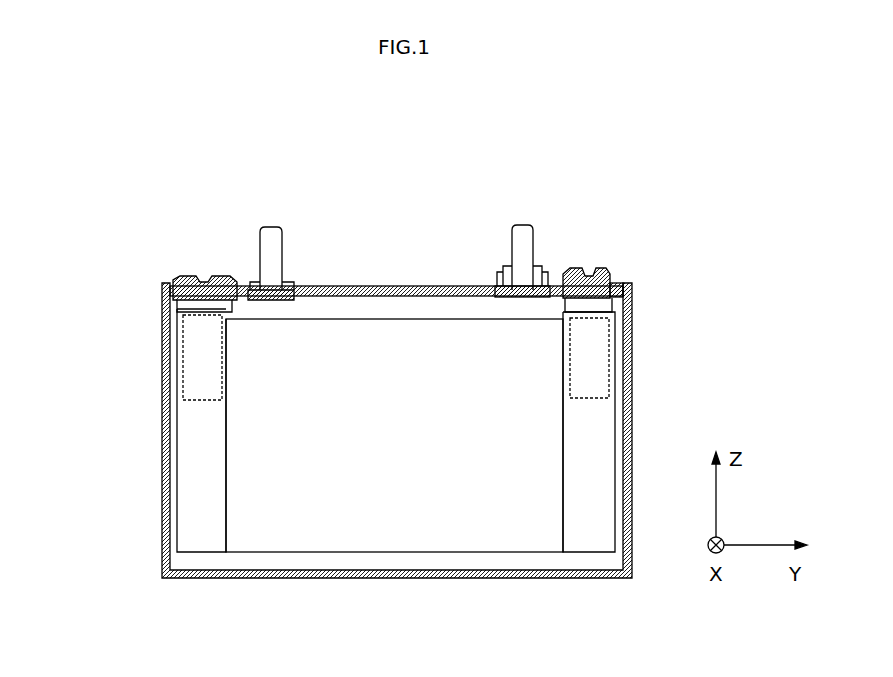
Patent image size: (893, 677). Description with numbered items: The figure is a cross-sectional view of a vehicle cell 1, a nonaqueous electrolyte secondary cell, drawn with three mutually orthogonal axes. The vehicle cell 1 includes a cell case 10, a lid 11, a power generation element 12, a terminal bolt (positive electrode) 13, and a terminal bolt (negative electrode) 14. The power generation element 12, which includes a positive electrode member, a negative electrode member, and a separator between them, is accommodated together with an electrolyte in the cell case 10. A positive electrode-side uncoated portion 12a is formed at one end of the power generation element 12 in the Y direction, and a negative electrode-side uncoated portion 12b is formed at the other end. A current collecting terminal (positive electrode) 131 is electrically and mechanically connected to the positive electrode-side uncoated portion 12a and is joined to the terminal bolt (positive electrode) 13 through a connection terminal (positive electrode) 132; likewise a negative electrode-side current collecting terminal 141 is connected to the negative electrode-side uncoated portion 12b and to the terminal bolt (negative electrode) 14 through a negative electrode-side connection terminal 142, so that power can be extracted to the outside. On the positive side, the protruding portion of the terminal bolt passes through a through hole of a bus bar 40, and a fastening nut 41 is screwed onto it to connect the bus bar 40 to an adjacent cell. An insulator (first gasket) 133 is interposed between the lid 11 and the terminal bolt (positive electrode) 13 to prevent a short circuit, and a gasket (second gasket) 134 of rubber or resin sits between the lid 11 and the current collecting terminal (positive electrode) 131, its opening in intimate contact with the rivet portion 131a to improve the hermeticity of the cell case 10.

The vehicle cell 1 is at (147, 427).
The cell case 10 is at (287, 572).
The lid 11 is at (370, 287).
The power generation element 12 is at (428, 528).
The positive electrode-side uncoated portion 12a is at (588, 535).
The negative electrode-side uncoated portion 12b is at (201, 540).
The terminal bolt (positive electrode) 13 is at (522, 262).
The terminal bolt (negative electrode) 14 is at (278, 280).
The bus bar 40 is at (505, 265).
The fastening nut 41 is at (497, 272).
The current collecting terminal (positive electrode) 131 is at (600, 362).
The rivet portion 131a is at (605, 286).
The connection terminal (positive electrode) 132 is at (575, 270).
The insulator (first gasket) 133 is at (495, 287).
The gasket (second gasket) 134 is at (633, 292).
The negative electrode-side current collecting terminal 141 is at (197, 362).
The negative electrode-side connection terminal 142 is at (173, 285).